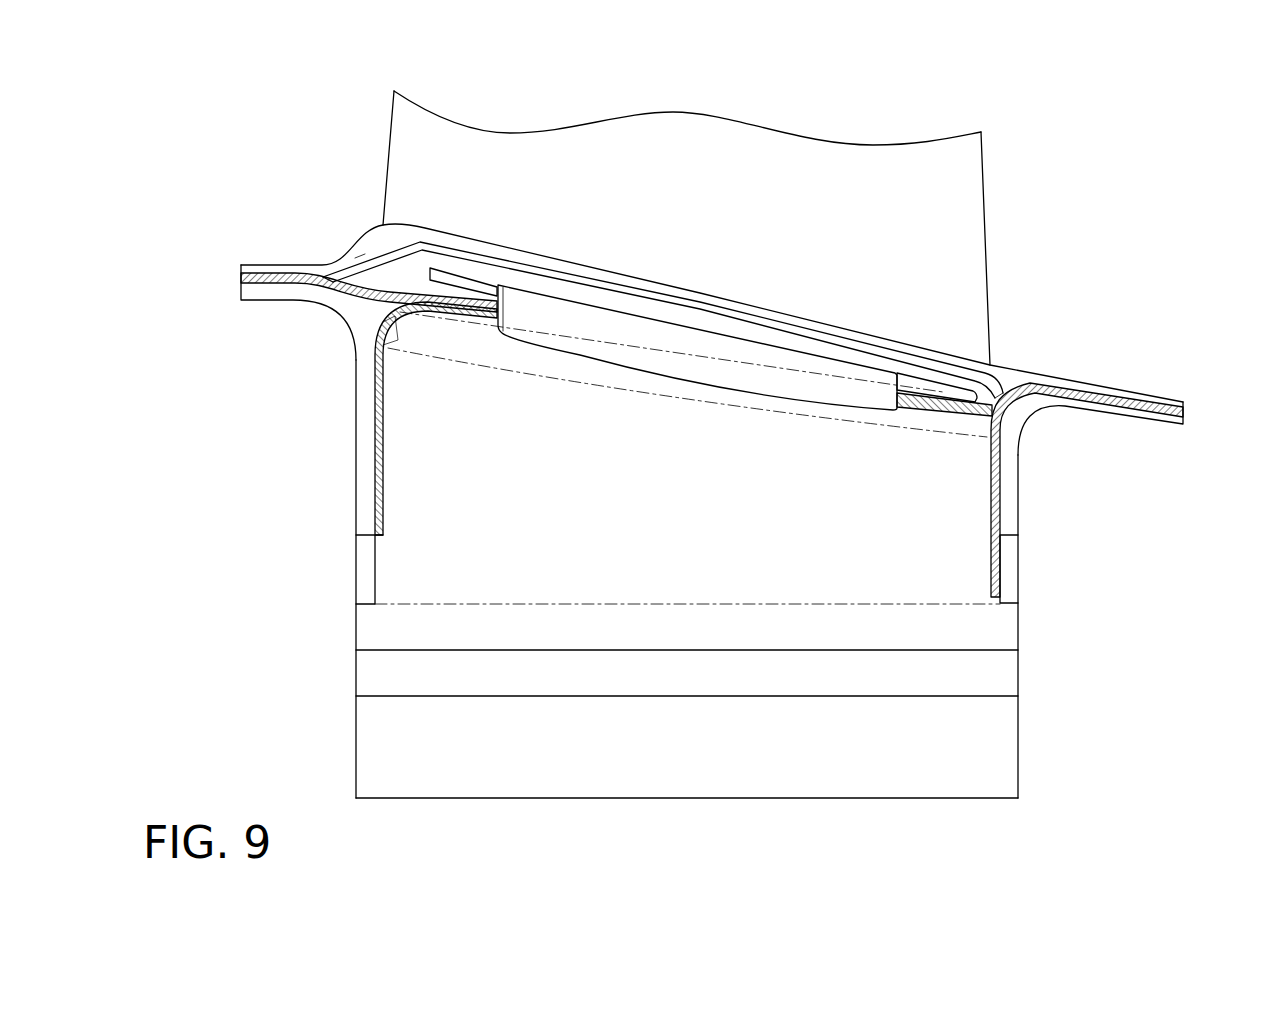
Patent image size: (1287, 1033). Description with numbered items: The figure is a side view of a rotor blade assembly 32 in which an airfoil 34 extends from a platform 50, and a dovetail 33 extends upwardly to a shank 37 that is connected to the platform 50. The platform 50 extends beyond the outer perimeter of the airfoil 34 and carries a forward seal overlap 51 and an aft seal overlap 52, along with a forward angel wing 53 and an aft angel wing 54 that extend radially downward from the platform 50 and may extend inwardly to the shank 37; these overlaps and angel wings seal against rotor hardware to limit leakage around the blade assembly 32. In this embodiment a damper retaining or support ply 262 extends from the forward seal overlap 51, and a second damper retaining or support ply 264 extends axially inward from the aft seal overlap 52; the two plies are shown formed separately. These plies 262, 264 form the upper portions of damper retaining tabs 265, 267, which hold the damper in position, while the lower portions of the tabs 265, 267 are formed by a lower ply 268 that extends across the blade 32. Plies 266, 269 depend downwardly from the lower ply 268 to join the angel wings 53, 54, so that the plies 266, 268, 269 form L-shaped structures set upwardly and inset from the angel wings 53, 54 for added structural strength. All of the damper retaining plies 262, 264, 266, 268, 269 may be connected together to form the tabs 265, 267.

The rotor blade assembly 32 is at (285, 120).
The airfoil 34 is at (1005, 152).
The platform 50 is at (1085, 318).
The forward seal overlap 51 is at (224, 268).
The aft seal overlap 52 is at (1208, 407).
The forward angel wing 53 is at (340, 545).
The aft angel wing 54 is at (1037, 565).
The dovetail 33 is at (341, 724).
The shank 37 is at (719, 546).
The damper retaining ply 262 is at (355, 270).
The damper retaining ply 264 is at (1030, 380).
The damper retaining tab 265 is at (452, 322).
The ply 266 is at (385, 433).
The damper retaining tab 267 is at (938, 432).
The lower ply 268 is at (473, 313).
The ply 269 is at (990, 526).